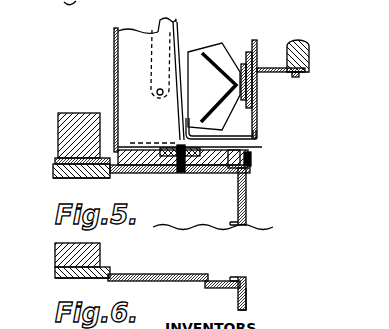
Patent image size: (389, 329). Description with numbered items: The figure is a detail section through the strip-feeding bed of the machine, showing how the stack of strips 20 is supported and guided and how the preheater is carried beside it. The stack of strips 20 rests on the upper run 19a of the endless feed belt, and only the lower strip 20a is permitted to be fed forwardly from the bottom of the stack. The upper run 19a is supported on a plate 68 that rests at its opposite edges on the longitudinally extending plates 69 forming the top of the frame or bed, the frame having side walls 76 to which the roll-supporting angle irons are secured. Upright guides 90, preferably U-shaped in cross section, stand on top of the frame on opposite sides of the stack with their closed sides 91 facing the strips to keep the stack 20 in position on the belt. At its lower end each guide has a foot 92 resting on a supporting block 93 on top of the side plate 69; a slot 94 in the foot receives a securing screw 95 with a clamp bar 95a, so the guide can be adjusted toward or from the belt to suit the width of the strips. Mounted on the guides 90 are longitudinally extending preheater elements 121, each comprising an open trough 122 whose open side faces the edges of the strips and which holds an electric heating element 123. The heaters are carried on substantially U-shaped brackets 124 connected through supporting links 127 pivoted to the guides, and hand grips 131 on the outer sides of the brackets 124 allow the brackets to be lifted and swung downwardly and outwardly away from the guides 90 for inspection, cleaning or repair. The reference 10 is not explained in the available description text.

In FIG. 5, the frame wall 10 is at (250, 219).
In FIG. 6, the frame wall 10 is at (253, 282).
In FIG. 5, the upper run of the belt 19a is at (53, 168).
In FIG. 6, the upper run of the belt 19a is at (110, 270).
In FIG. 5, the stack of strips 20 is at (67, 113).
In FIG. 6, the stack of strips 20 is at (57, 246).
In FIG. 5, the lower strip 20a is at (57, 160).
In FIG. 5, the plate 68 is at (76, 178).
In FIG. 6, the plate 68 is at (74, 278).
In FIG. 5, the longitudinally extending plates 69 is at (158, 173).
In FIG. 6, the longitudinally extending plates 69 is at (182, 275).
In FIG. 6, the side walls 76 is at (251, 290).
In FIG. 5, the upright guides 90 is at (125, 26).
In FIG. 5, the closed sides 91 is at (113, 51).
In FIG. 5, the feet 92 is at (250, 152).
In FIG. 5, the supporting block 93 is at (252, 170).
In FIG. 5, the slot 94 is at (256, 132).
In FIG. 5, the securing screw 95 is at (188, 173).
In FIG. 5, the clamp bar 95a is at (172, 148).
In FIG. 5, the preheater elements 121 is at (224, 42).
In FIG. 5, the open trough 122 is at (246, 48).
In FIG. 5, the electric heating element 123 is at (205, 79).
In FIG. 5, the U-shaped brackets 124 is at (258, 97).
In FIG. 5, the supporting links 127 is at (178, 23).
In FIG. 5, the hand grips 131 is at (298, 38).